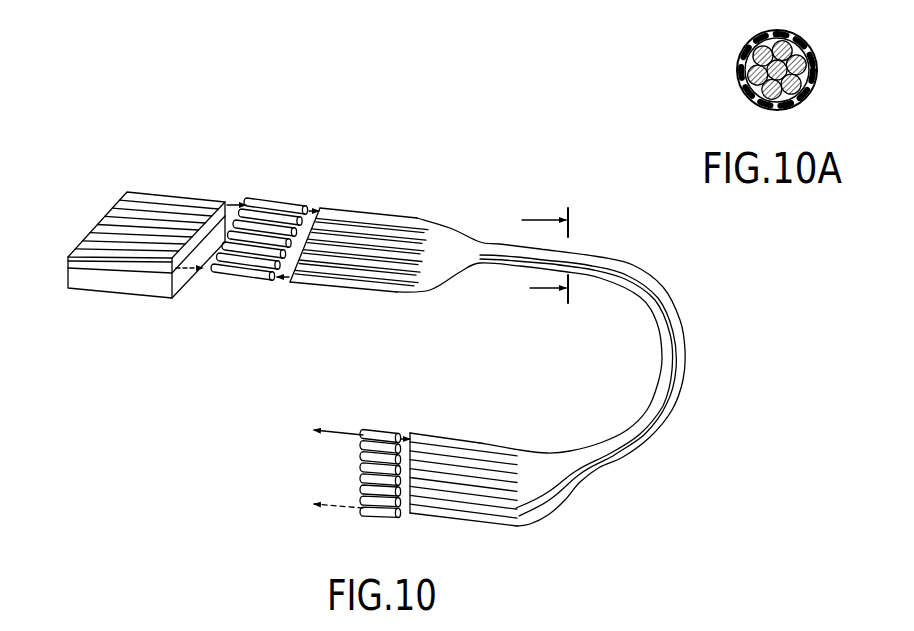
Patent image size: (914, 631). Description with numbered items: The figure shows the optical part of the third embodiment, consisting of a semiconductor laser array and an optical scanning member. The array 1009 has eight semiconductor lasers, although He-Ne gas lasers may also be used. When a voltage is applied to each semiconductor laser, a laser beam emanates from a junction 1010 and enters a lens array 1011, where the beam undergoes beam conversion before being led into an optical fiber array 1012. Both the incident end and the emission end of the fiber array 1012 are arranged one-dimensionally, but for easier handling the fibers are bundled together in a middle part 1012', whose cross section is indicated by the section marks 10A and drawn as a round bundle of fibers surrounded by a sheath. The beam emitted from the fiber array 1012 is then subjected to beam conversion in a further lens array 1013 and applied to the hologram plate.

In FIG. 10, the array 1009 is at (113, 188).
In FIG. 10, the junction 1010 is at (236, 196).
In FIG. 10, the lens array 1011 is at (289, 206).
In FIG. 10, the optical fiber array 1012 is at (403, 345).
In FIG. 10, the middle part 1012' is at (567, 372).
In FIG. 10A, the middle part 1012' is at (812, 70).
In FIG. 10, the section line 10A is at (539, 259).
In FIG. 10, the lens array 1013 is at (407, 412).